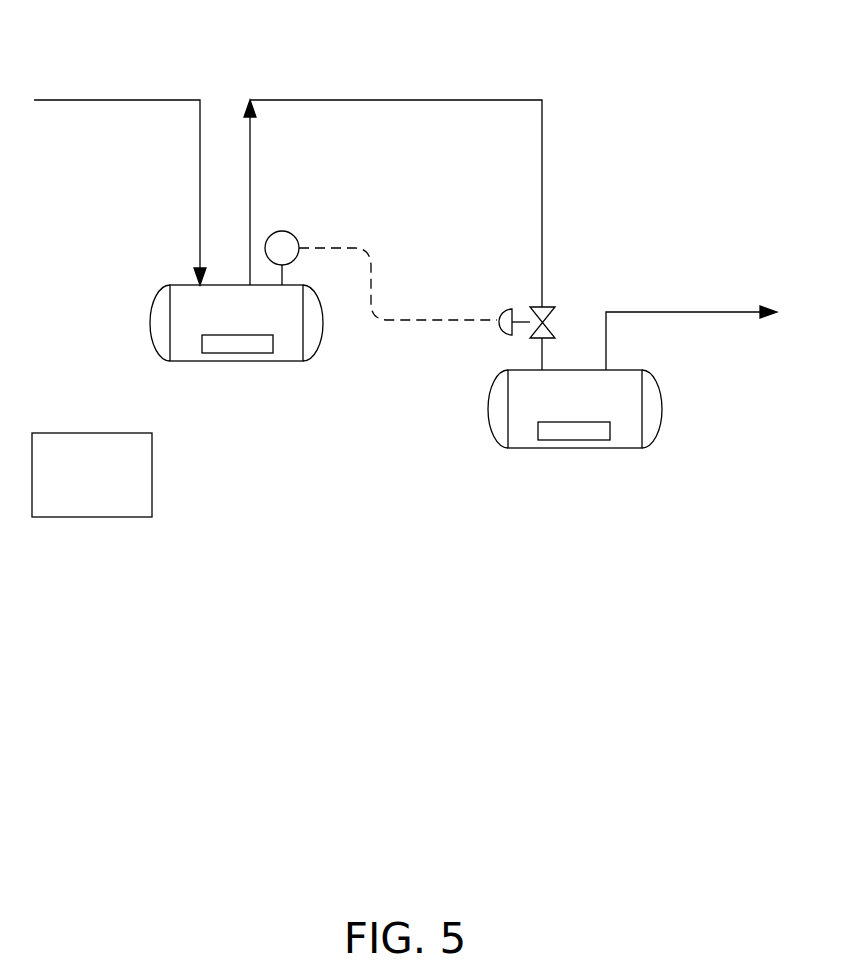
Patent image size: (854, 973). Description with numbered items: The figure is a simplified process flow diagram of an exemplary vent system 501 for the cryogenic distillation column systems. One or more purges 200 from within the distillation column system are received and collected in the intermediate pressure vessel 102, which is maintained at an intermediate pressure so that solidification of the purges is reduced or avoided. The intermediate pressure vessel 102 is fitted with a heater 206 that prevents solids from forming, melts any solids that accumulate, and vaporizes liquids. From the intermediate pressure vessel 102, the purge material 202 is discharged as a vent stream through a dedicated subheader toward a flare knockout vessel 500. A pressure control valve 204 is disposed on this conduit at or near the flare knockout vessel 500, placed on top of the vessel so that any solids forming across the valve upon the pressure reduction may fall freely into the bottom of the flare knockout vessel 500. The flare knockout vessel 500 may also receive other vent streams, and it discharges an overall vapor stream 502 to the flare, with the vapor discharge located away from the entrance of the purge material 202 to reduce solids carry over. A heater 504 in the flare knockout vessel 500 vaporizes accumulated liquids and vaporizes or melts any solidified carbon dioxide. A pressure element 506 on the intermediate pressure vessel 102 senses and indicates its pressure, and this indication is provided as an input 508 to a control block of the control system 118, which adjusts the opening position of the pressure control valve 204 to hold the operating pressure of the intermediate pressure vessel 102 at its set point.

The purges 200 is at (95, 100).
The purge material 202 is at (338, 100).
The intermediate pressure vessel 102 is at (152, 303).
The heater 206 is at (235, 355).
The pressure element 506 is at (282, 230).
The input 508 is at (358, 250).
The pressure control valve 204 is at (508, 308).
The flare knockout vessel 500 is at (617, 450).
The heater 504 is at (568, 442).
The overall vapor stream 502 is at (675, 312).
The control system 118 is at (71, 487).
The vent system 501 is at (382, 907).